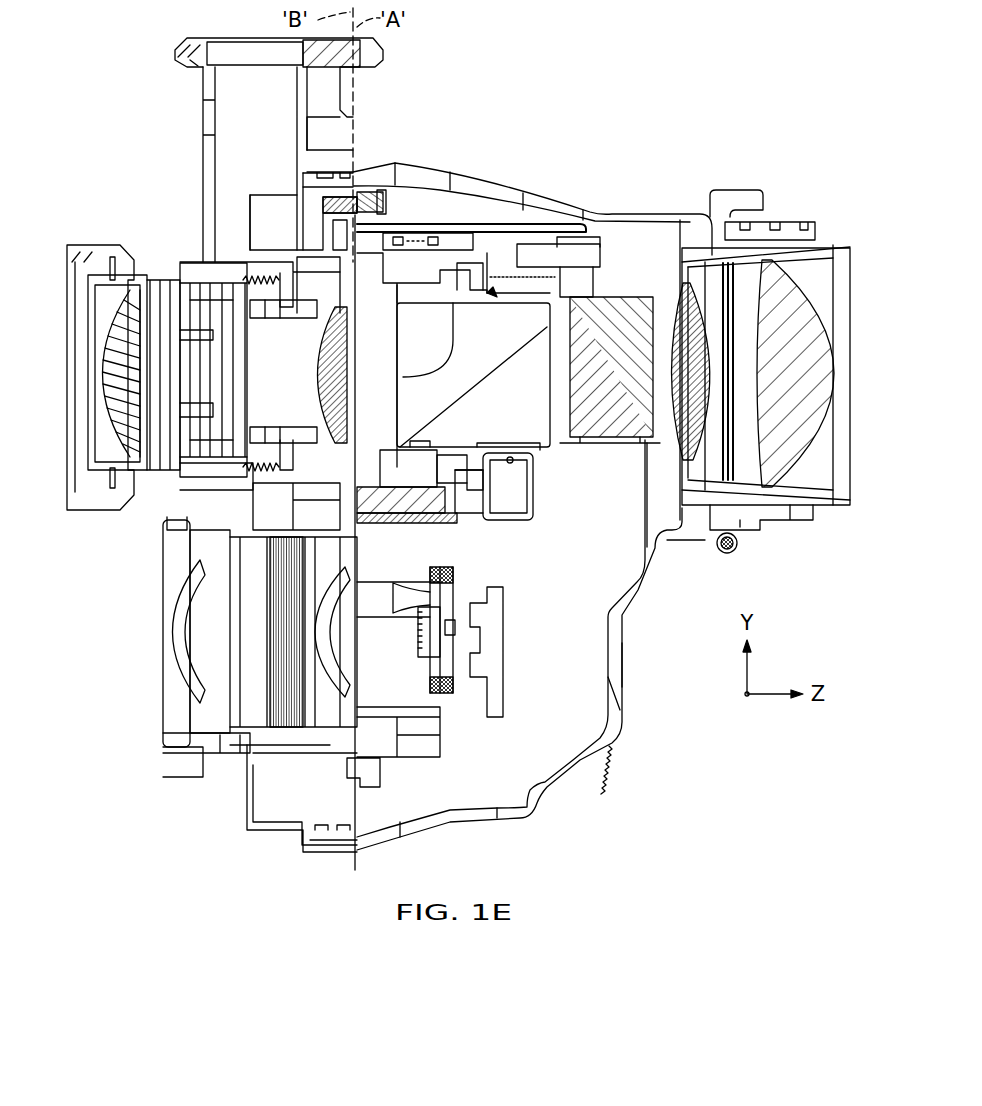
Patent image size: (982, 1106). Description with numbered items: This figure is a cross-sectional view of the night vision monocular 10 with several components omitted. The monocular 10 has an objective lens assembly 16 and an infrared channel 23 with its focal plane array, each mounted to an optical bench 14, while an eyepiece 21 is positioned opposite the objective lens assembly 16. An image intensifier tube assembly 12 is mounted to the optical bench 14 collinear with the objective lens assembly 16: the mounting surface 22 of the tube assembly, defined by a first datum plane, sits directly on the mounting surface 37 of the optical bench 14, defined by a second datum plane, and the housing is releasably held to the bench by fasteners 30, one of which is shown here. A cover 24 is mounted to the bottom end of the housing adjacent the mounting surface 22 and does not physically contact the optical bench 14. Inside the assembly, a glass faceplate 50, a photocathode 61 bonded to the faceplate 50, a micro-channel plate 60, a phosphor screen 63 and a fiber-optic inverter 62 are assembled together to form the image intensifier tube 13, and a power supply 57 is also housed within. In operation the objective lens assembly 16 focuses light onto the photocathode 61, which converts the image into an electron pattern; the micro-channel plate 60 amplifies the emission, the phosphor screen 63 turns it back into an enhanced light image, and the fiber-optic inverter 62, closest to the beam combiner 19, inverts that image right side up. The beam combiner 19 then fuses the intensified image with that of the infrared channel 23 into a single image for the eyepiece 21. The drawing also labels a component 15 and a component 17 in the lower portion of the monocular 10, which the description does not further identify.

The night vision monocular 10 is at (617, 106).
The image intensifier tube assembly 12 is at (499, 352).
The image intensifier tube 13 is at (516, 330).
The optical bench 14 is at (303, 175).
The lower lens group 15 is at (375, 697).
The objective lens assembly 16 is at (85, 372).
The base 17 is at (377, 748).
The beam combiner 19 is at (612, 312).
The eyepiece 21 is at (820, 437).
The mounting surface 22 is at (322, 212).
The infrared (IR) channel 23 is at (421, 627).
The cover 24 is at (350, 487).
The fastener 30 is at (375, 195).
The mounting surface 37 is at (356, 180).
The glass faceplate 50 is at (350, 425).
The power supply 57 is at (403, 507).
The micro-channel plate (MCP) 60 is at (400, 325).
The photocathode 61 is at (352, 318).
The fiber-optic inverter 62 is at (526, 428).
The phosphor screen 63 is at (497, 293).